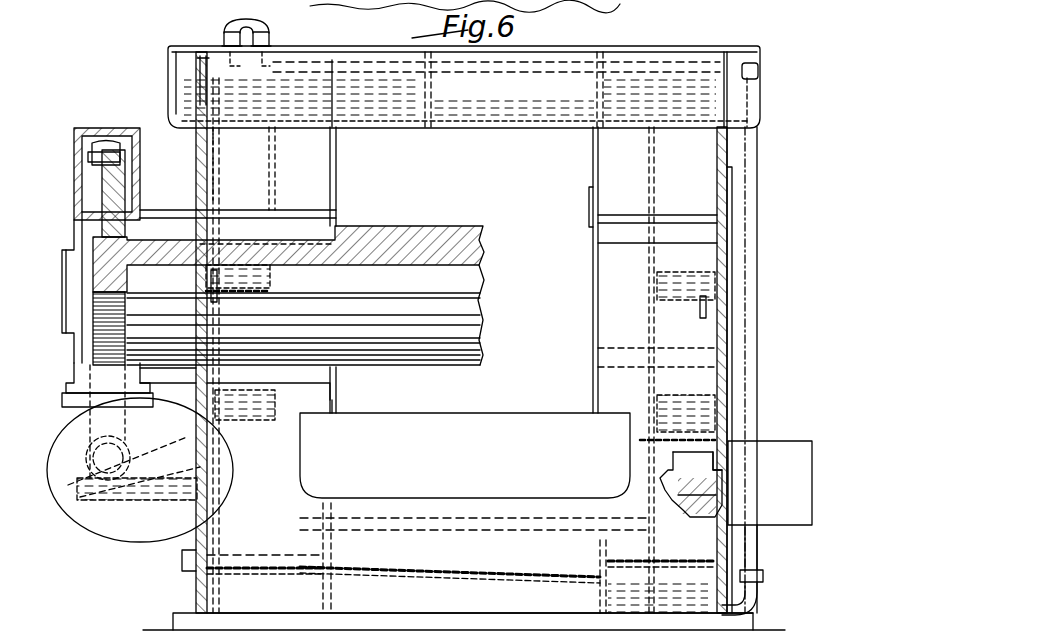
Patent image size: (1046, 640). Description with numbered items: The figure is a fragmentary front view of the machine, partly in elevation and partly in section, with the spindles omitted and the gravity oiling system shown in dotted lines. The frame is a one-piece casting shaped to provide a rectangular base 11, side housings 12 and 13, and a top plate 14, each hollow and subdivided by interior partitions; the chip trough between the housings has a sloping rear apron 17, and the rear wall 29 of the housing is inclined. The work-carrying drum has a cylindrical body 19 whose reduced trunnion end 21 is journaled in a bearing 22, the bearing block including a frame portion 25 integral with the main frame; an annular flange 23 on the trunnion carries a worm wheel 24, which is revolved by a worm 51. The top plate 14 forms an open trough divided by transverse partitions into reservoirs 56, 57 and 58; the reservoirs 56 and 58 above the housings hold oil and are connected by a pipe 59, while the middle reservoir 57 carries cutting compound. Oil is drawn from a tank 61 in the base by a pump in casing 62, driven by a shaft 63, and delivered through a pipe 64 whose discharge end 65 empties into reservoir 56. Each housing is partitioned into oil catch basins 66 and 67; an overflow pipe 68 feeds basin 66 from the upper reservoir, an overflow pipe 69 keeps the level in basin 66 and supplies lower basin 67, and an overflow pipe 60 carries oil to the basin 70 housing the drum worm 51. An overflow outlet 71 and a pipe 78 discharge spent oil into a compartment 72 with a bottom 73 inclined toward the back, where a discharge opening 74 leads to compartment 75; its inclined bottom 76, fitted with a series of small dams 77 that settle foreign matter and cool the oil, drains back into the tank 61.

The rectangular base 11 is at (196, 583).
The side housing 12 is at (337, 152).
The side housing 13 is at (594, 150).
The top plate 14 is at (470, 127).
The rear apron 17 is at (465, 449).
The cylindrical body 19 is at (406, 226).
The trunnion end 21 is at (282, 240).
The bearing 22 is at (216, 240).
The annular flange 23 is at (115, 195).
The worm wheel 24 is at (107, 128).
The frame portion 25 is at (657, 291).
The rear wall 29 is at (306, 162).
The worm 51 is at (66, 404).
The reservoir 56 is at (210, 60).
The reservoir 57 is at (566, 82).
The reservoir 58 is at (662, 90).
The pipe 59 is at (531, 104).
The overflow pipe 60 is at (196, 448).
The tank 61 is at (690, 582).
The pump casing 62 is at (770, 448).
The shaft 63 is at (720, 496).
The oil delivery pipe 64 is at (758, 150).
The discharge end 65 is at (226, 60).
The oil catch basin 66 is at (258, 280).
The oil catch basin 67 is at (255, 405).
The overflow pipe 68 is at (706, 144).
The overflow pipe 69 is at (206, 279).
The basin 70 is at (64, 492).
The overflow outlet 71 is at (202, 470).
The compartment 72 is at (264, 533).
The inclined bottom 73 is at (256, 572).
The discharge opening 74 is at (324, 554).
The compartment 75 is at (475, 539).
The inclined bottom 76 is at (396, 585).
The small dams 77 is at (545, 575).
The pipe 78 is at (706, 432).